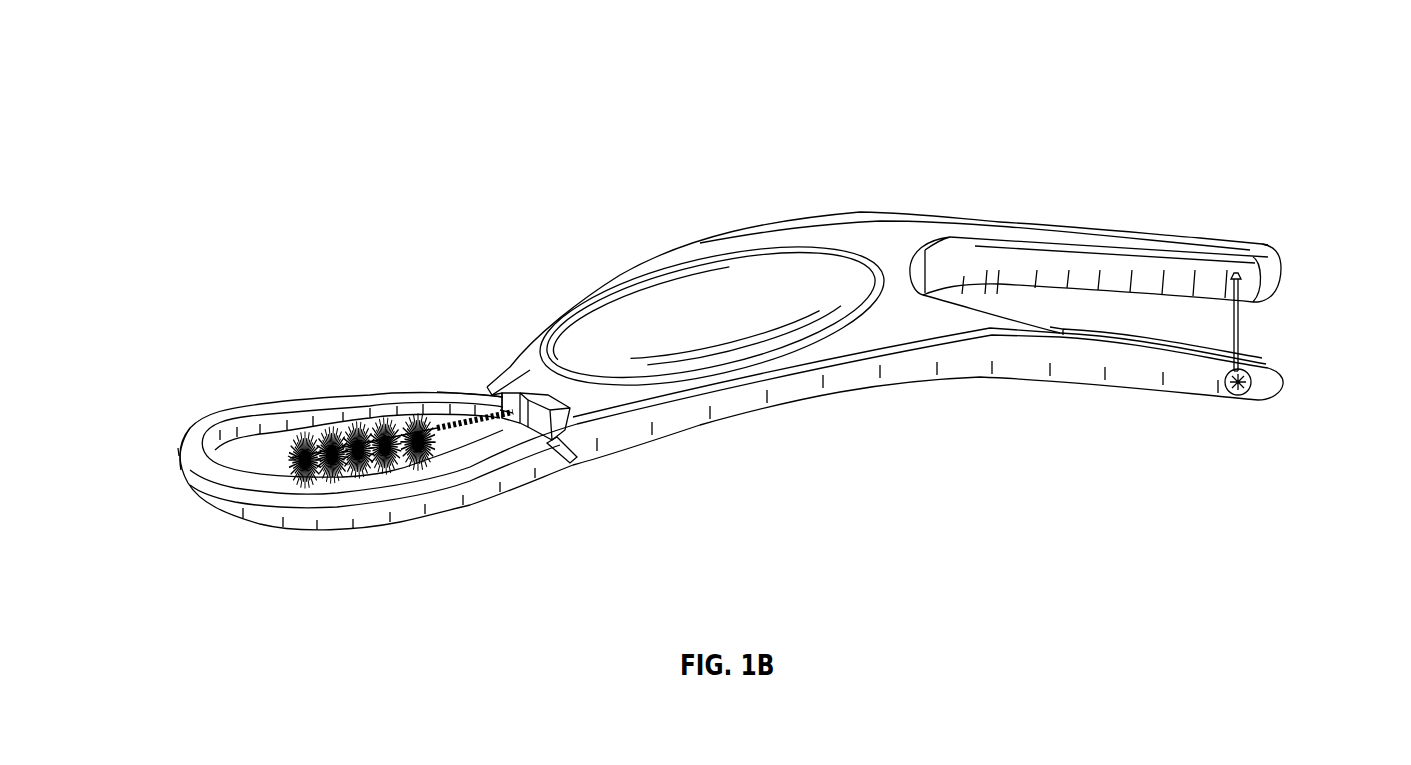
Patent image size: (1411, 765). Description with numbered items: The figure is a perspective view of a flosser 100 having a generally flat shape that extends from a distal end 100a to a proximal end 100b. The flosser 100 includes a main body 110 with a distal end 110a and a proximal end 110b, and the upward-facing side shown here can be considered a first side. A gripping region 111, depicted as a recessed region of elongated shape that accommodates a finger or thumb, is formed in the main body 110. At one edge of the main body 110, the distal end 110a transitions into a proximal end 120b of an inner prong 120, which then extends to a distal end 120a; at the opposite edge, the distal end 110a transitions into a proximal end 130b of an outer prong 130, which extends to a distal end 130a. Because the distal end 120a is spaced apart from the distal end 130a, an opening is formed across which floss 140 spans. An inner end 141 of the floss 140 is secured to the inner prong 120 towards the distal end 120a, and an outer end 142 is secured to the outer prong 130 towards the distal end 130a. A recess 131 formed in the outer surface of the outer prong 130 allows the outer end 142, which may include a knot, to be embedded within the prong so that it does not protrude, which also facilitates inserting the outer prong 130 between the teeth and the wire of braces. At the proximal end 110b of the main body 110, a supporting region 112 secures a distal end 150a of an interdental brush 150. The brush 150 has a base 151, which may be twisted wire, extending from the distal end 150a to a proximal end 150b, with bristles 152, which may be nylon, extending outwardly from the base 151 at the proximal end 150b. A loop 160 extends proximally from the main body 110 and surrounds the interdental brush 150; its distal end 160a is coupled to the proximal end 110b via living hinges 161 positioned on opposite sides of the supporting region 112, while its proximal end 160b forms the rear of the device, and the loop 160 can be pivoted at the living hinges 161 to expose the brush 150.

The flosser 100 is at (226, 98).
The distal end of flosser 100a is at (1300, 130).
The proximal end of flosser 100b is at (205, 545).
The main body 110 is at (673, 255).
The distal end of main body 110a is at (858, 195).
The proximal end of main body 110b is at (500, 385).
The gripping region 111 is at (777, 300).
The supporting region 112 is at (533, 392).
The inner prong 120 is at (1098, 200).
The distal end of inner prong 120a is at (1252, 228).
The proximal end of inner prong 120b is at (938, 195).
The outer prong 130 is at (1126, 400).
The distal end of outer prong 130a is at (1270, 388).
The proximal end of outer prong 130b is at (962, 348).
The recess 131 is at (1237, 397).
The floss 140 is at (1246, 332).
The inner end of floss 141 is at (1238, 284).
The outer end of floss 142 is at (1243, 374).
The interdental brush 150 is at (385, 468).
The distal end of interdental brush 150a is at (500, 408).
The proximal end of interdental brush 150b is at (290, 458).
The base 151 is at (463, 435).
The bristles 152 is at (358, 482).
The loop 160 is at (368, 550).
The distal end of loop 160a is at (436, 362).
The proximal end of loop 160b is at (176, 400).
The living hinges 161 is at (482, 400).